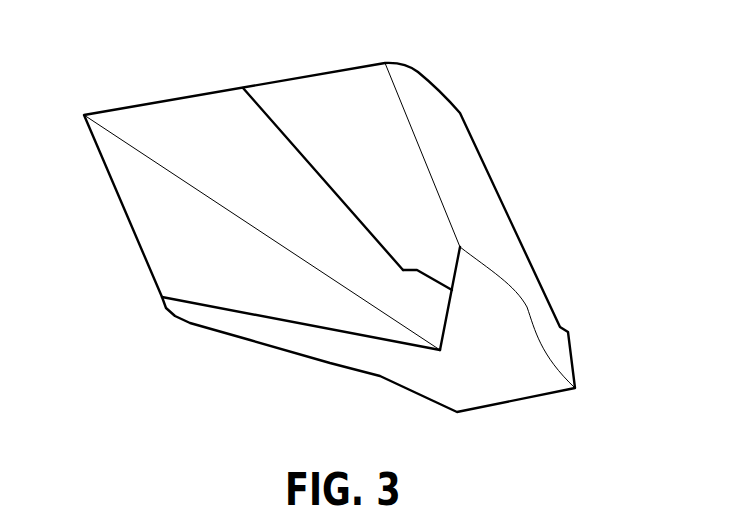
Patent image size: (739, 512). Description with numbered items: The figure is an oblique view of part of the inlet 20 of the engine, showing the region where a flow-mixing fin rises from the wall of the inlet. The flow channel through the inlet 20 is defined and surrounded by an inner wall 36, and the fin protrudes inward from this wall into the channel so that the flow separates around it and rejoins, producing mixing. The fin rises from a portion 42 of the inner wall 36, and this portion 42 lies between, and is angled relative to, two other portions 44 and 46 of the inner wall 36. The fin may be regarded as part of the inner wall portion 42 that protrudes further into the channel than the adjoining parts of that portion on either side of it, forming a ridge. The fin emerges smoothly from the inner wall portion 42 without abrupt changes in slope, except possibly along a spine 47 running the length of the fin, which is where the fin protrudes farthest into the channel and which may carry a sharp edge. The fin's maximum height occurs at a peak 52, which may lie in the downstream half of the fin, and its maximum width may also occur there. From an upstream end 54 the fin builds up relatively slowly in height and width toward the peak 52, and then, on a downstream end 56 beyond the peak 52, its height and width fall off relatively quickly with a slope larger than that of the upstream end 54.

The inlet 20 is at (133, 73).
The inner wall 36 is at (307, 113).
The inner wall portion 42 is at (193, 133).
The inner wall portion 44 is at (188, 245).
The inner wall portion 46 is at (450, 222).
The spine 47 is at (310, 157).
The peak 52 is at (403, 270).
The upstream end 54 is at (335, 213).
The downstream end 56 is at (417, 272).